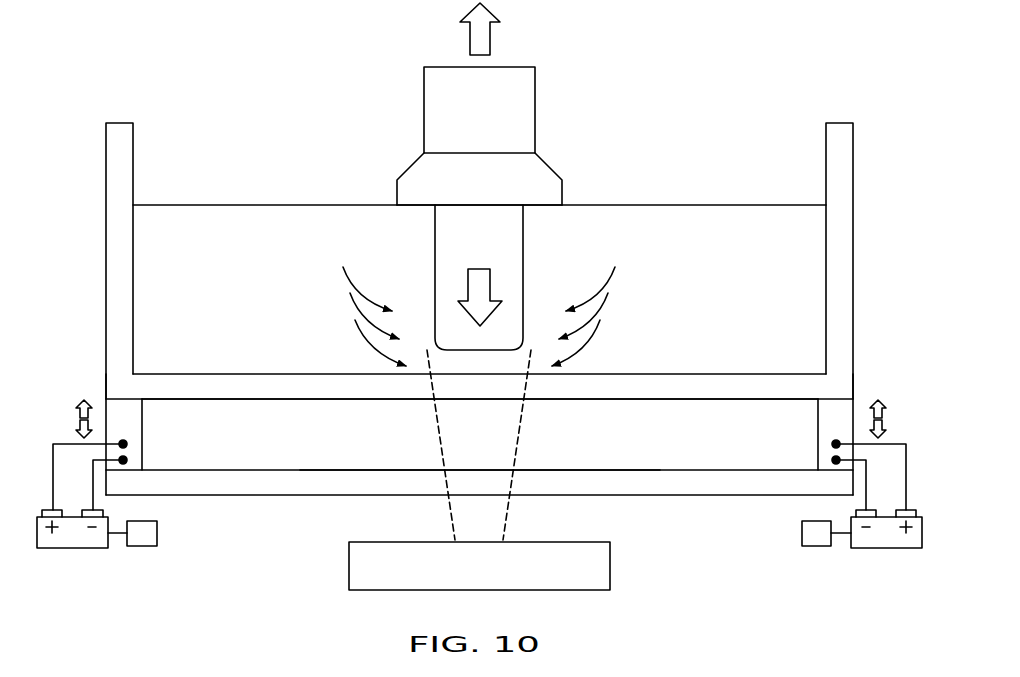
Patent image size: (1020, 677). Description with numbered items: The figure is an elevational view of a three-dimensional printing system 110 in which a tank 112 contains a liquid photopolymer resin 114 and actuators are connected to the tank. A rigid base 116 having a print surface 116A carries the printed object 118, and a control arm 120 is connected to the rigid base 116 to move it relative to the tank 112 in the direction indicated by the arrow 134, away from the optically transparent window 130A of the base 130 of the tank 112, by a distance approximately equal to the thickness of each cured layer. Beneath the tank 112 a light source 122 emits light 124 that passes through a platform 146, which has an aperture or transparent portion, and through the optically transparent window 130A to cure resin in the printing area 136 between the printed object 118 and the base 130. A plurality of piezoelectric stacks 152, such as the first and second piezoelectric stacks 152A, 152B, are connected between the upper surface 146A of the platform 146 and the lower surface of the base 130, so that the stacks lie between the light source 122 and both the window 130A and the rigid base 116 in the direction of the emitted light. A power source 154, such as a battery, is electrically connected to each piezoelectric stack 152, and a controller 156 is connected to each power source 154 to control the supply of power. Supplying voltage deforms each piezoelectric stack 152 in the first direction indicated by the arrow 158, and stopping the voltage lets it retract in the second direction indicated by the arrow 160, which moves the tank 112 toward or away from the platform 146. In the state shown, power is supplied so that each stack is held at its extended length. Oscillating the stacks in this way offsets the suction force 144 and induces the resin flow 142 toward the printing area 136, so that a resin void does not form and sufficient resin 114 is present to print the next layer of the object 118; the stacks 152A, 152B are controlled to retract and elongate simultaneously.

The three-dimensional printing system 110 is at (757, 71).
The tank 112 is at (105, 157).
The resin 114 is at (247, 205).
The rigid base 116 is at (549, 165).
The print surface 116A is at (542, 207).
The printed object 118 is at (435, 244).
The control arm 120 is at (424, 108).
The light source 122 is at (610, 567).
The light 124 is at (508, 517).
The base 130 is at (287, 400).
The optically transparent window 130A is at (416, 400).
The arrow 134 is at (468, 40).
The printing area 136 is at (482, 362).
The resin flow 142 is at (610, 273).
The suction force 144 is at (491, 282).
The platform 146 is at (240, 497).
The upper surface of the platform 146A is at (428, 497).
The piezoelectric stack 152 is at (142, 437).
The first piezoelectric stack 152A is at (855, 410).
The second piezoelectric stack 152B is at (105, 408).
The power source 154 is at (72, 550).
The controller 156 is at (143, 547).
The arrow 158 is at (78, 399).
The arrow 160 is at (76, 430).